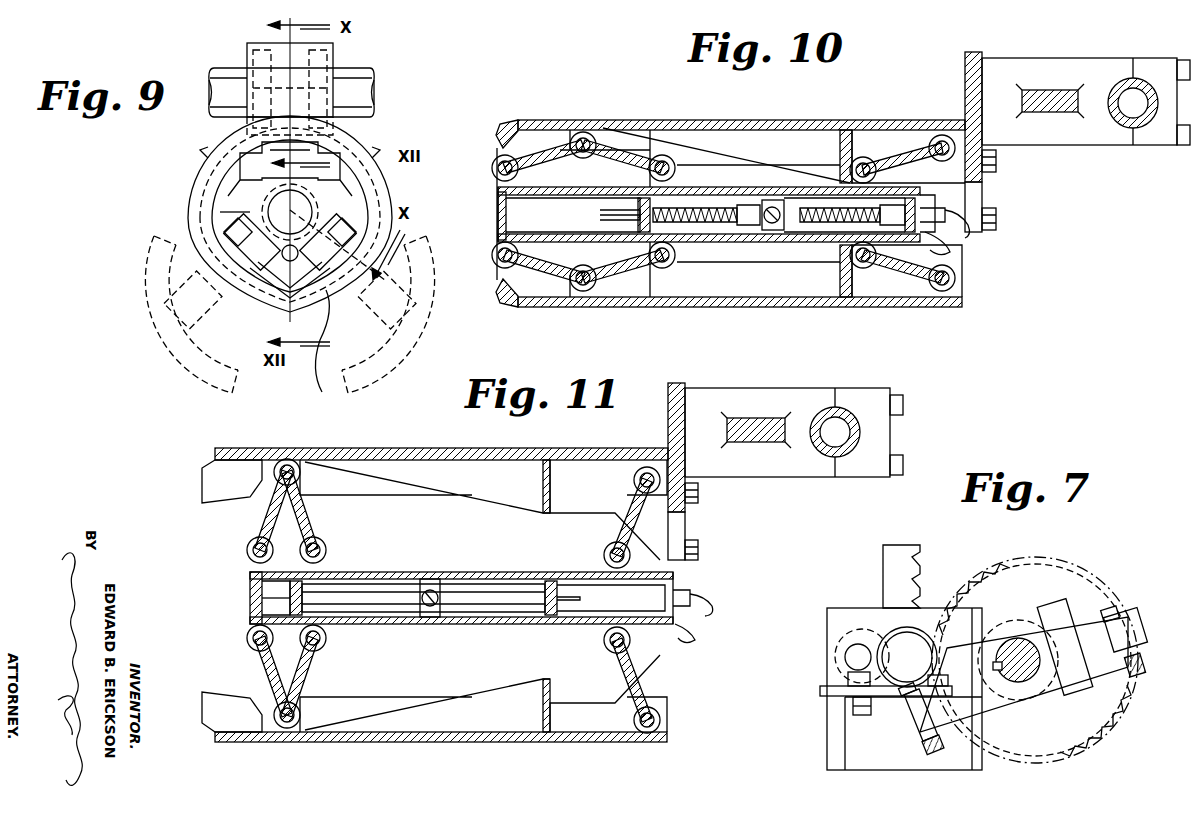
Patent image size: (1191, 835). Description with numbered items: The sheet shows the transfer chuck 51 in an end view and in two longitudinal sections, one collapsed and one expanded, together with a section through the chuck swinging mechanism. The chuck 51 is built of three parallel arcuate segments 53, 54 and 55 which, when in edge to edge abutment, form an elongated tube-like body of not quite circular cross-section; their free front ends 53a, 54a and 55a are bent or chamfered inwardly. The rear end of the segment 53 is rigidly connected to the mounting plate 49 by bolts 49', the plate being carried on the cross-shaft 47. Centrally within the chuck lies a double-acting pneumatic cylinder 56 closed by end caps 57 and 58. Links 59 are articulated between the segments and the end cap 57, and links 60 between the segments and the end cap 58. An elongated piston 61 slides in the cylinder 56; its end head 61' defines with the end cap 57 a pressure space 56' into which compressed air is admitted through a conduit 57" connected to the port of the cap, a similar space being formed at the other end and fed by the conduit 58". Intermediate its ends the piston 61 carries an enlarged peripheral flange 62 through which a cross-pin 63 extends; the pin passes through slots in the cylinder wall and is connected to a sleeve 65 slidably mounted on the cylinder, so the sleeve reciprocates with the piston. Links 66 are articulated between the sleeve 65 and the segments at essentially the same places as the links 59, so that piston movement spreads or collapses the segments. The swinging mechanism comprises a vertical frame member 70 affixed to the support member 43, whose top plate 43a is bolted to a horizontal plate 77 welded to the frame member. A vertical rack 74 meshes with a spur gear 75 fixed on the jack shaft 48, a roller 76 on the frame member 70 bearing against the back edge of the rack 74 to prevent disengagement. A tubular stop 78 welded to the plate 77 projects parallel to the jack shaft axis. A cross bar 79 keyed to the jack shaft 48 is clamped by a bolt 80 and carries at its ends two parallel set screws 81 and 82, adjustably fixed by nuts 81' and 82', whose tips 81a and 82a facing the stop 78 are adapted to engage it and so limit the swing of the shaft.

In FIG. 7, the support member 43 is at (862, 760).
In FIG. 7, the horizontal plate 43a is at (875, 718).
In FIG. 9, the cross-shaft 47 is at (365, 85).
In FIG. 10, the cross-shaft 47 is at (1138, 122).
In FIG. 11, the cross-shaft 47 is at (858, 447).
In FIG. 7, the jack shaft 48 is at (1012, 648).
In FIG. 9, the mounting plate 49 is at (265, 79).
In FIG. 10, the mounting plate 49 is at (952, 142).
In FIG. 11, the mounting plate 49 is at (701, 463).
In FIG. 10, the bolts 49' is at (1011, 189).
In FIG. 11, the bolts 49' is at (718, 521).
In FIG. 9, the chuck 51 is at (147, 229).
In FIG. 10, the chuck 51 is at (605, 112).
In FIG. 9, the arcuate segment 53 is at (358, 136).
In FIG. 10, the arcuate segment 53 is at (715, 124).
In FIG. 11, the arcuate segment 53 is at (415, 450).
In FIG. 9, the front end of segment 53 53a is at (213, 160).
In FIG. 10, the front end of segment 53 53a is at (513, 123).
In FIG. 11, the front end of segment 53 53a is at (207, 458).
In FIG. 9, the arcuate segment 54 is at (195, 184).
In FIG. 9, the front end of segment 54 54a is at (218, 212).
In FIG. 9, the arcuate segment 55 is at (385, 183).
In FIG. 10, the arcuate segment 55 is at (730, 306).
In FIG. 11, the arcuate segment 55 is at (430, 744).
In FIG. 9, the front end of segment 55 55a is at (334, 353).
In FIG. 10, the front end of segment 55 55a is at (506, 300).
In FIG. 11, the front end of segment 55 55a is at (212, 735).
In FIG. 10, the double-acting pneumatic cylinder 56 is at (844, 240).
In FIG. 10, the pressure space 56' is at (596, 234).
In FIG. 11, the pressure space 56' is at (241, 616).
In FIG. 10, the end cap 57 is at (498, 212).
In FIG. 11, the end cap 57 is at (252, 585).
In FIG. 10, the end cap 58 is at (920, 210).
In FIG. 11, the end cap 58 is at (676, 584).
In FIG. 10, the links 59 is at (540, 160).
In FIG. 11, the links 59 is at (270, 505).
In FIG. 10, the links 60 is at (895, 160).
In FIG. 11, the links 60 is at (632, 505).
In FIG. 10, the piston 61 is at (706, 243).
In FIG. 11, the piston 61 is at (423, 580).
In FIG. 10, the end head 61' is at (621, 202).
In FIG. 11, the end head 61' is at (333, 576).
In FIG. 10, the peripheral flange 62 is at (780, 208).
In FIG. 11, the peripheral flange 62 is at (424, 619).
In FIG. 10, the cross-pin 63 is at (772, 207).
In FIG. 11, the cross-pin 63 is at (432, 590).
In FIG. 10, the sleeve 65 is at (686, 242).
In FIG. 11, the sleeve 65 is at (406, 578).
In FIG. 10, the links 66 is at (625, 160).
In FIG. 11, the links 66 is at (302, 520).
In FIG. 7, the frame member 70 is at (835, 742).
In FIG. 7, the rack 74 is at (892, 575).
In FIG. 7, the spur gear 75 is at (1088, 735).
In FIG. 7, the roller 76 is at (840, 643).
In FIG. 7, the horizontal plate 77 is at (820, 691).
In FIG. 7, the tubular stop 78 is at (895, 635).
In FIG. 7, the cross bar 79 is at (998, 702).
In FIG. 7, the bolt 80 is at (1070, 690).
In FIG. 7, the set screw 81 is at (1148, 683).
In FIG. 7, the nut 81' is at (1145, 640).
In FIG. 7, the tip of set screw 81 81a is at (1112, 609).
In FIG. 7, the set screw 82 is at (921, 746).
In FIG. 7, the nut 82' is at (902, 759).
In FIG. 7, the tip of set screw 82 82a is at (912, 696).